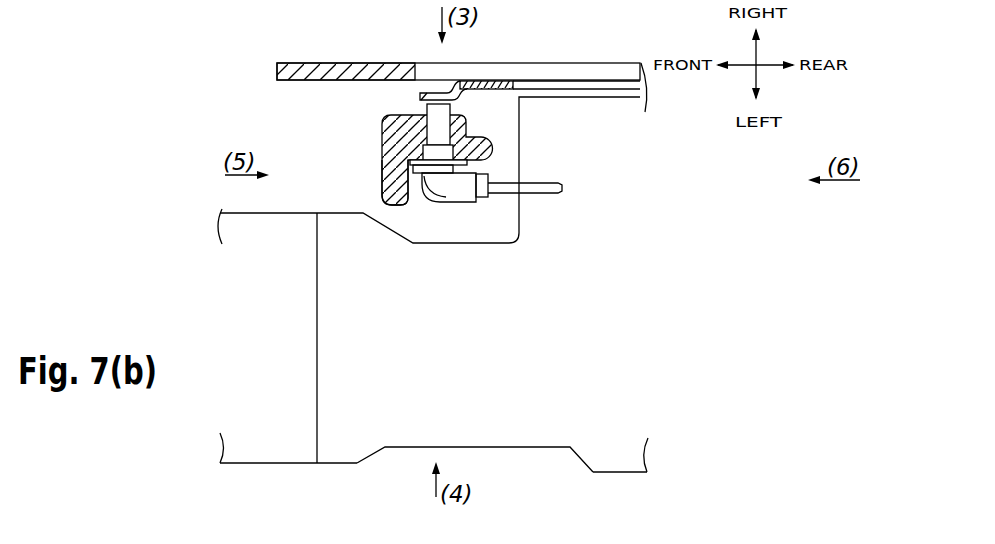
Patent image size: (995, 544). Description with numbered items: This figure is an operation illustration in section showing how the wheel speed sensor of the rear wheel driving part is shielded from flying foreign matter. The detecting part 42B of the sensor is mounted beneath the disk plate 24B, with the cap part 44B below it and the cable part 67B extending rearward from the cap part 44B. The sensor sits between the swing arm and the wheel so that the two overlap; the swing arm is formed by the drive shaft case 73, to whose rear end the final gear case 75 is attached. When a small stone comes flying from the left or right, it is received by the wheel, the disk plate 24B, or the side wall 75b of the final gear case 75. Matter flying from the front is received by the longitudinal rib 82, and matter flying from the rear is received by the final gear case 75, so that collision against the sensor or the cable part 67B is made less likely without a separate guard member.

The disk plate 24B is at (348, 63).
The detecting part 42B is at (387, 117).
The longitudinal rib 82 is at (382, 193).
The cap part 44B is at (459, 202).
The cable part 67B is at (542, 190).
The drive shaft case 73 is at (252, 452).
The side wall 75b is at (530, 448).
The final gear case 75 is at (617, 453).